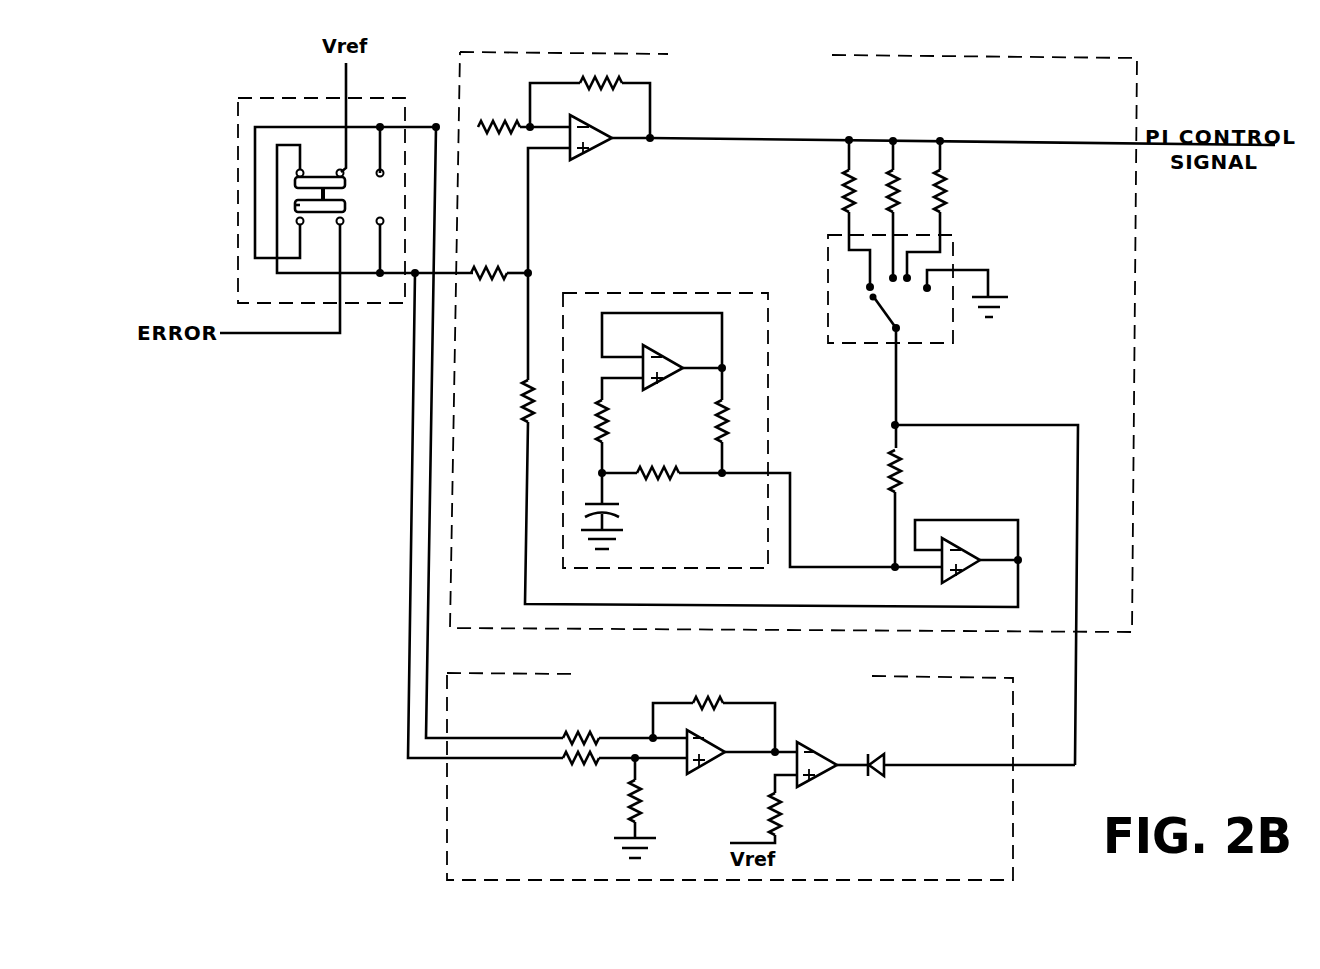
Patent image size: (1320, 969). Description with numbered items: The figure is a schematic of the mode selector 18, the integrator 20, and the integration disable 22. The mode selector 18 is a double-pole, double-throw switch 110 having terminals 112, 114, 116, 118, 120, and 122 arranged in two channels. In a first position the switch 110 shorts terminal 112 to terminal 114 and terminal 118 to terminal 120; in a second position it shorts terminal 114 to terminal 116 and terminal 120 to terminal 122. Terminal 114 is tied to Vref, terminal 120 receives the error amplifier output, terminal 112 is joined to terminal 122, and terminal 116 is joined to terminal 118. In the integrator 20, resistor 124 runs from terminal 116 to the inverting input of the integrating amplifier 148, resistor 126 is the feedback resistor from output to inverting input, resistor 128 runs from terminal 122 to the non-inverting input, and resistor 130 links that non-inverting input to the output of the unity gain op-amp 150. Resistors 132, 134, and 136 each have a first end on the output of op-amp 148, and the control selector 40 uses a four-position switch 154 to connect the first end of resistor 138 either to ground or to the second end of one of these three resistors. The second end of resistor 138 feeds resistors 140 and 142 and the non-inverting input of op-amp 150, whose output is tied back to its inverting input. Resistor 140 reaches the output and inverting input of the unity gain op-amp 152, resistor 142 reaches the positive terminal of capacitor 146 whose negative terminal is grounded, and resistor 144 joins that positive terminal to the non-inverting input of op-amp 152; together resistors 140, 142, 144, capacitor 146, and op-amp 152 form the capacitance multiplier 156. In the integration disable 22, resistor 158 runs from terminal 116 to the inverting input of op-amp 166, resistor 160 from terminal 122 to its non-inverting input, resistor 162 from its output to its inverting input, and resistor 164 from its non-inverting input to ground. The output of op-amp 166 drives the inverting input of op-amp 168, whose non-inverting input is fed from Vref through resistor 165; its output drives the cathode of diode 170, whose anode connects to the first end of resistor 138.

The mode selector 18 is at (310, 97).
The integrator 20 is at (893, 55).
The integration disable 22 is at (1013, 822).
The control selector 40 is at (826, 327).
The double-pole, double-throw switch 110 is at (294, 207).
The terminal 112 is at (297, 171).
The terminal 114 is at (339, 168).
The terminal 116 is at (383, 169).
The terminal 118 is at (297, 224).
The terminal 120 is at (338, 226).
The terminal 122 is at (384, 227).
The resistor 124 is at (496, 114).
The resistor 126 is at (592, 73).
The resistor 128 is at (474, 269).
The resistor 130 is at (518, 415).
The resistor 132 is at (842, 184).
The resistor 134 is at (887, 184).
The resistor 136 is at (947, 187).
The resistor 138 is at (905, 475).
The resistor 140 is at (745, 424).
The resistor 142 is at (672, 468).
The resistor 144 is at (607, 420).
The capacitor 146 is at (612, 512).
The integrating amplifier 148 is at (600, 152).
The unity gain operational amplifier 150 is at (953, 546).
The unity gain operational amplifier 152 is at (658, 345).
The four-position switch 154 is at (872, 332).
The capacitance multiplier 156 is at (732, 293).
The resistor 158 is at (588, 732).
The resistor 160 is at (592, 768).
The resistor 162 is at (716, 710).
The resistor 164 is at (645, 802).
The resistor 165 is at (785, 803).
The operational amplifier 166 is at (703, 772).
The operational amplifier 168 is at (810, 746).
The diode 170 is at (890, 758).